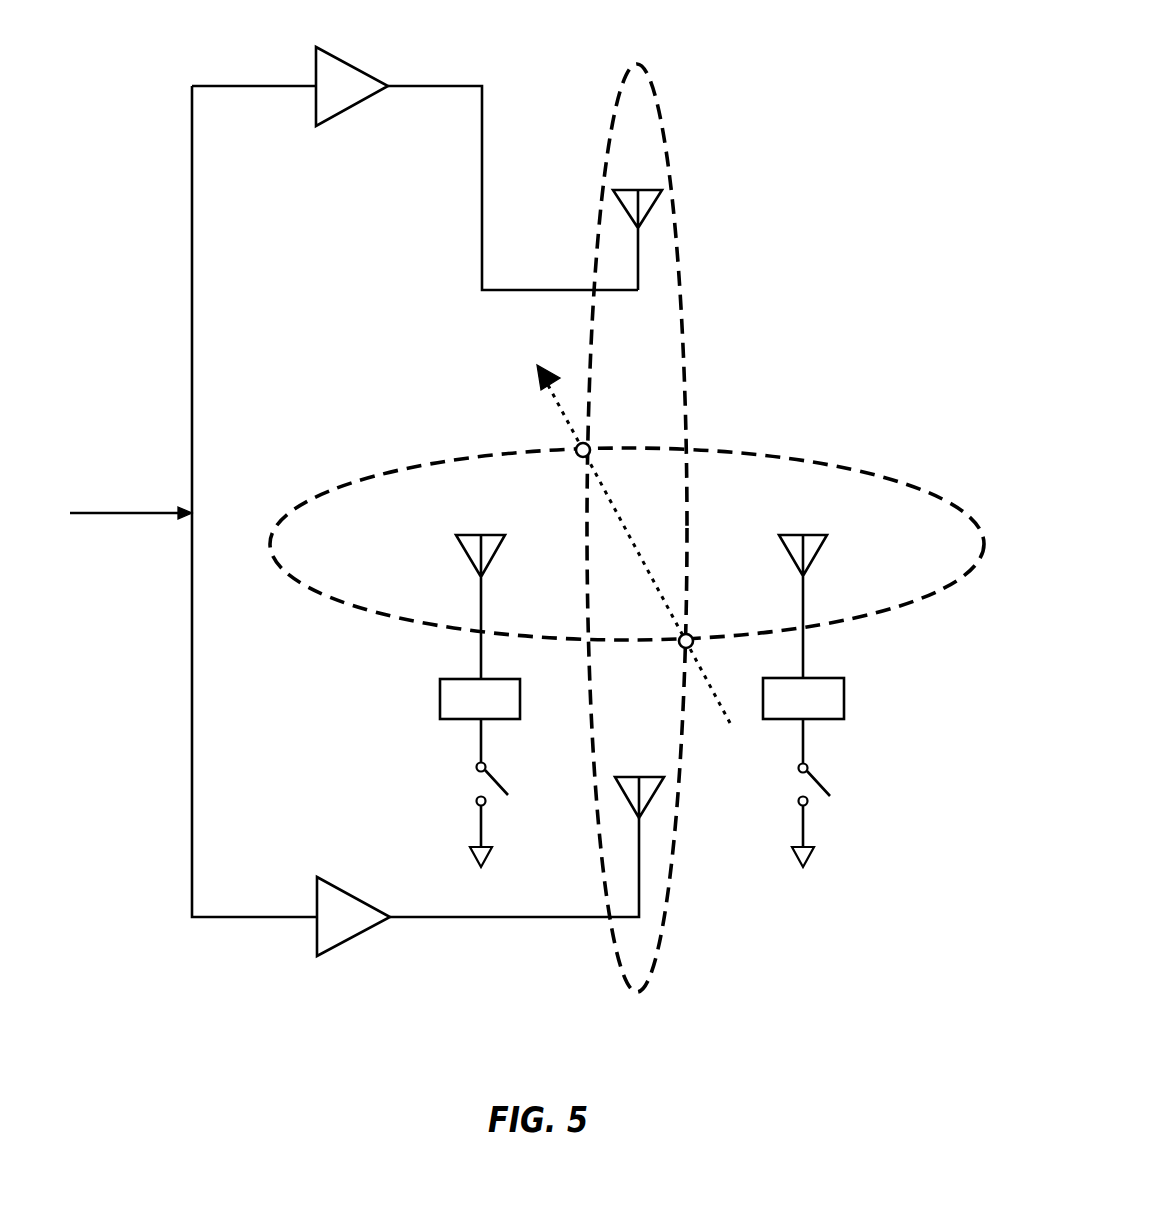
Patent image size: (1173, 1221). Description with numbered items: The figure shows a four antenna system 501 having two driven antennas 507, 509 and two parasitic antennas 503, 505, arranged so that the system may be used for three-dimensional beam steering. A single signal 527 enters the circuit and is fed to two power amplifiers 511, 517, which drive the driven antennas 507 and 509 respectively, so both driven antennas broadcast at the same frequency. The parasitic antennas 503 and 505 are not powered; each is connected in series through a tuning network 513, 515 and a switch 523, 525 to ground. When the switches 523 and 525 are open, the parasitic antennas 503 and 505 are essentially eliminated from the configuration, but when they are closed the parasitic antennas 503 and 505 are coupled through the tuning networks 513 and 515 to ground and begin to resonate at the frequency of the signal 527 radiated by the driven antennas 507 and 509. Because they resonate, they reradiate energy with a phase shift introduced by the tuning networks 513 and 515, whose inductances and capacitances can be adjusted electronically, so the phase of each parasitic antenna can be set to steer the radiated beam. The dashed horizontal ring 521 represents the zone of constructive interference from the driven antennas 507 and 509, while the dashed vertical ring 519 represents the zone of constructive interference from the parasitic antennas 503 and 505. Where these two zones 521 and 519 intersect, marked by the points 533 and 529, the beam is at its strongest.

The four antenna system 501 is at (808, 70).
The parasitic antenna 503 is at (481, 534).
The parasitic antenna 505 is at (803, 534).
The driven antenna 507 is at (636, 189).
The driven antenna 509 is at (638, 776).
The power amplifier 511 is at (349, 62).
The tuning network 513 is at (458, 678).
The tuning network 515 is at (826, 677).
The power amplifier 517 is at (348, 892).
The zone of constructive interference from parasitic antennas 519 is at (688, 324).
The zone of constructive interference from driven antennas 521 is at (870, 469).
The switch 523 is at (497, 780).
The switch 525 is at (820, 780).
The signal 527 is at (133, 510).
The location of strongest beam 529 is at (695, 635).
The location of strongest beam 533 is at (578, 445).